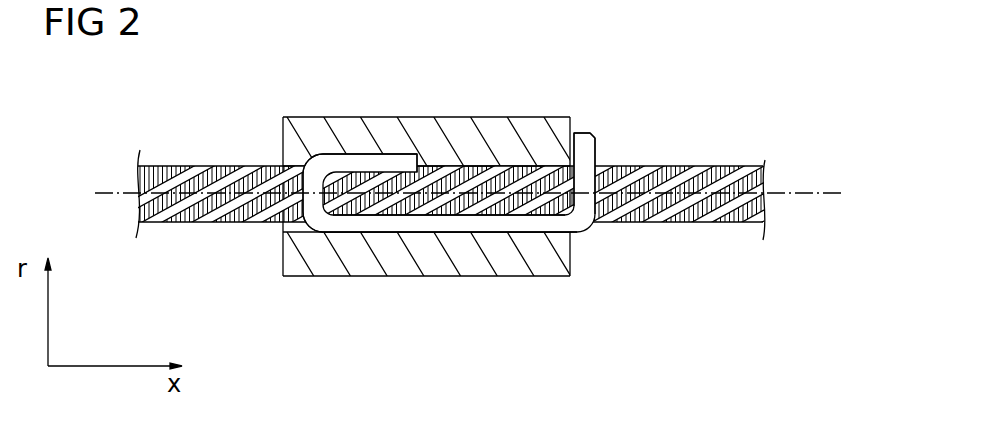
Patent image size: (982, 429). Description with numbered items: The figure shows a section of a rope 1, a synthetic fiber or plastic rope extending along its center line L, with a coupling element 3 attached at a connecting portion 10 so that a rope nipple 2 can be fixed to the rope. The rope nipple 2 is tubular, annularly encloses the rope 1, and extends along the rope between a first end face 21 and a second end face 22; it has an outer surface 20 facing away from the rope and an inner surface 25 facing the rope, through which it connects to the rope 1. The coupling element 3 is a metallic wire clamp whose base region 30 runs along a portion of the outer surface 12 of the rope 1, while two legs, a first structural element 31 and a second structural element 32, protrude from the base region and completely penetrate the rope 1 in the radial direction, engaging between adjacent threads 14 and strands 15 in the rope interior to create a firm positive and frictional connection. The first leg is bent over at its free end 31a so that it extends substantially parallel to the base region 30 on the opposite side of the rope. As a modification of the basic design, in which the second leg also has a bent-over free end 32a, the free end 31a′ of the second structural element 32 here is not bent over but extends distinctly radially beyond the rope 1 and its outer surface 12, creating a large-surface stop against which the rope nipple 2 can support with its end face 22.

The rope 1 is at (478, 218).
The rope nipple 2 is at (424, 162).
The coupling element 3 is at (446, 195).
The connecting portion 10 is at (525, 200).
The outer surface 12 is at (745, 223).
The threads 14 is at (698, 205).
The wires of strand 15 is at (670, 219).
The outer surface 20 is at (335, 117).
The first end face 21 is at (283, 147).
The second end face 22 is at (571, 121).
The inner surface 25 is at (293, 212).
The base region 30 is at (440, 222).
The first structural element 31 is at (238, 165).
The free end 31a is at (380, 162).
The free end 31a′ is at (593, 138).
The second structural element 32 is at (600, 167).
The free end 32a is at (588, 136).
The center line L is at (808, 193).